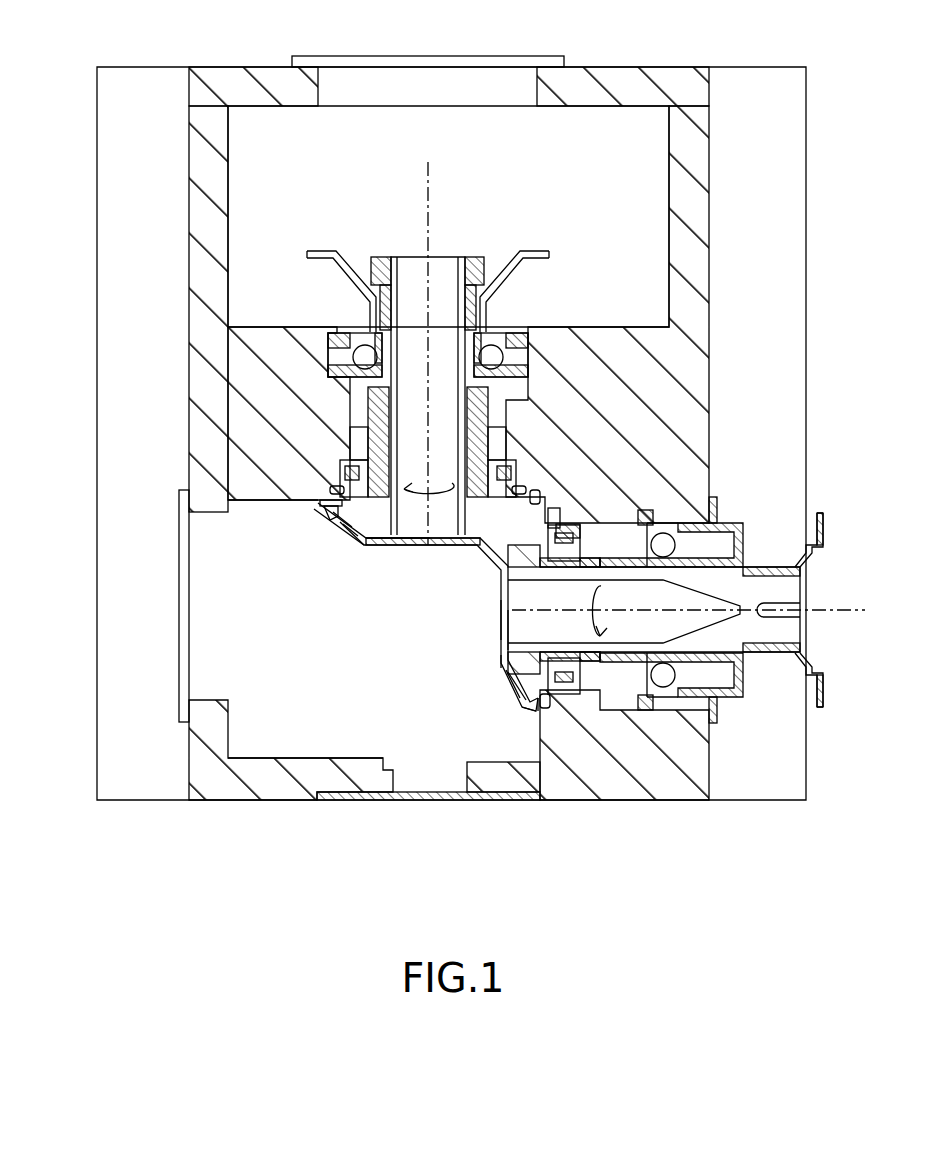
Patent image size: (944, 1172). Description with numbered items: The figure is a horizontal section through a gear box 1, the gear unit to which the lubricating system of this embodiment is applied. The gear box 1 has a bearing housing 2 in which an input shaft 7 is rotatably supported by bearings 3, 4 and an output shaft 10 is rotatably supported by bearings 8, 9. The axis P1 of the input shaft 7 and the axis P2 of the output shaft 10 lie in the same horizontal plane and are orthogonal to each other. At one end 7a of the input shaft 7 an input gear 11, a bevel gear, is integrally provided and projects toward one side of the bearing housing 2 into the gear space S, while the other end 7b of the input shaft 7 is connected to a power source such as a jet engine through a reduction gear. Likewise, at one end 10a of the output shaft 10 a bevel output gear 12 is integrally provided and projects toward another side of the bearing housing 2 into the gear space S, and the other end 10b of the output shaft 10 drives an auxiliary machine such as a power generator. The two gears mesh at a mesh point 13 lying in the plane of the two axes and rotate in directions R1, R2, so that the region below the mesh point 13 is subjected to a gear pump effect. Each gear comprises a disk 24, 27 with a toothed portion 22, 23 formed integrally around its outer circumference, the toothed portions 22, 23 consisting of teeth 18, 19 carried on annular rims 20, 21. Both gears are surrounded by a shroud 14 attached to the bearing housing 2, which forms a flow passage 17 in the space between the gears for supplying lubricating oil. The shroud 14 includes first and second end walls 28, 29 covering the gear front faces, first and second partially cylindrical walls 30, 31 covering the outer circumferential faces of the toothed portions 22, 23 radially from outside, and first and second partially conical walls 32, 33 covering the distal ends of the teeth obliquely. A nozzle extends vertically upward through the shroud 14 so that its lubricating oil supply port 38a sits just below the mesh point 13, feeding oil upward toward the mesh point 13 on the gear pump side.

The gear box 1 is at (612, 64).
The bearing housing 2 is at (192, 388).
The bearing 3 is at (345, 465).
The bearing 4 is at (344, 357).
The input shaft 7 is at (403, 275).
The one end of the input shaft 7a is at (441, 522).
The other end of the input shaft 7b is at (441, 262).
The bearing 8 is at (566, 700).
The bearing 9 is at (650, 712).
The output shaft 10 is at (745, 563).
The one end of the output shaft 10a is at (527, 620).
The other end of the output shaft 10b is at (793, 592).
The input gear 11 is at (330, 532).
The output gear 12 is at (488, 710).
The mesh point 13 is at (506, 542).
The shroud 14 is at (494, 556).
The flow passage 17 is at (505, 633).
The teeth 18 is at (343, 545).
The teeth 19 is at (492, 700).
The annular rim 20 is at (353, 547).
The annular rim 21 is at (514, 712).
The toothed portion 22 is at (352, 627).
The toothed portion 23 is at (524, 847).
The disk 24 is at (390, 536).
The disk 27 is at (510, 652).
The first end wall 28 is at (362, 548).
The second end wall 29 is at (498, 672).
The first partially cylindrical wall 30 is at (320, 506).
The second partially cylindrical wall 31 is at (548, 700).
The first partially conical wall 32 is at (330, 522).
The second partially conical wall 33 is at (494, 690).
The lubricating oil supply port 38a is at (527, 516).
The axis of the input shaft P1 is at (434, 185).
The axis of the output shaft P2 is at (830, 613).
The rotational direction of the input gear R1 is at (438, 482).
The rotational direction of the output gear R2 is at (606, 598).
The gear space S is at (300, 716).